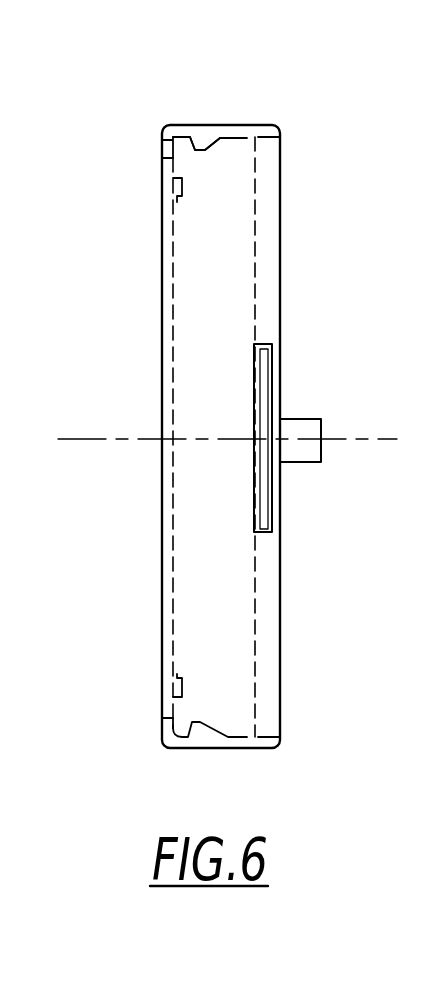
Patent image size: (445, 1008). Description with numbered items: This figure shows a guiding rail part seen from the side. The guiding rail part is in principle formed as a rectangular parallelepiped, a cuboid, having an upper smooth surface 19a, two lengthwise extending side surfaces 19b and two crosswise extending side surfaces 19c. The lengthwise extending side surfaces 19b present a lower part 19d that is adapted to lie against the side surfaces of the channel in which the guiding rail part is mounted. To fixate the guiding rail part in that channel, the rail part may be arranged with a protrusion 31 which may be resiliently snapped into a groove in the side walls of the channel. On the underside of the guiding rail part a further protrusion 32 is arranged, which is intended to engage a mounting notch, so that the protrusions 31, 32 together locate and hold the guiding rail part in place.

The upper smooth surface 19a is at (162, 326).
The lengthwise extending side surface 19b is at (205, 630).
The crosswise extending side surface 19c is at (220, 135).
The lower part 19d is at (270, 288).
The protrusion 31 is at (265, 402).
The protrusion 32 is at (300, 455).